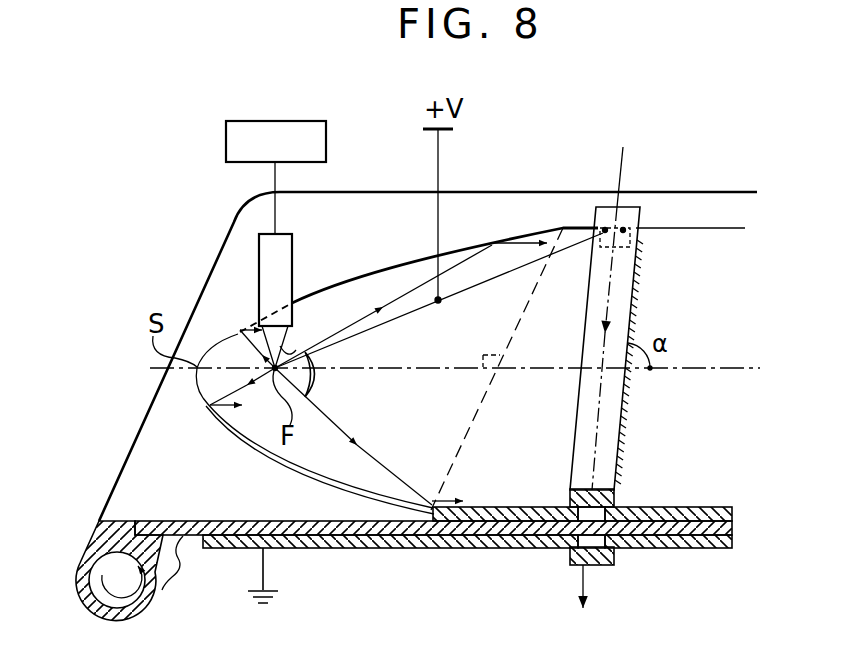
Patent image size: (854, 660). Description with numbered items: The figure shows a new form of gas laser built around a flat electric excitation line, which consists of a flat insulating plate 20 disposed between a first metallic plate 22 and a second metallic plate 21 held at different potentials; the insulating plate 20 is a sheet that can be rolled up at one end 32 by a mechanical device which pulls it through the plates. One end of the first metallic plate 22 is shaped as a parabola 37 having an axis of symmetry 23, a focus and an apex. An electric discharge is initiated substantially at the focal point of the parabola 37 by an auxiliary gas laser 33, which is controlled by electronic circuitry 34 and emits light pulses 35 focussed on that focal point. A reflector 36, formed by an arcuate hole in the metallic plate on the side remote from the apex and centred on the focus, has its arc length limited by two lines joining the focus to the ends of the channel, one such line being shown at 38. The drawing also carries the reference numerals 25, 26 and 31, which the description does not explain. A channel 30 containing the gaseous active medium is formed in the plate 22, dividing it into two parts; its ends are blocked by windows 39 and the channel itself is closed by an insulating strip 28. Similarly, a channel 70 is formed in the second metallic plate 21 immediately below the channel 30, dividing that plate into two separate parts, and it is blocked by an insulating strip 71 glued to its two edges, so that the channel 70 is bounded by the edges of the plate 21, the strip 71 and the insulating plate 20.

The insulative plate 20 is at (142, 607).
The second metallic plate 21 is at (362, 537).
The first metallic plate 22 is at (200, 395).
The axis of symmetry 23 is at (712, 366).
The collimating lens 25 is at (413, 288).
The reference plane 26 is at (475, 415).
The insulating strip 28 is at (618, 495).
The channel 30 is at (572, 500).
The light-absorbing coating 31 is at (631, 303).
The end 32 is at (168, 584).
The auxiliary gas laser 33 is at (268, 273).
The electronic circuitry 34 is at (308, 140).
The light pulses 35 is at (288, 345).
The reflector 36 is at (316, 383).
The parabola 37 is at (276, 455).
The line 38 is at (462, 248).
The windows 39 is at (627, 207).
The channel 70 is at (597, 540).
The insulating strip 71 is at (573, 560).